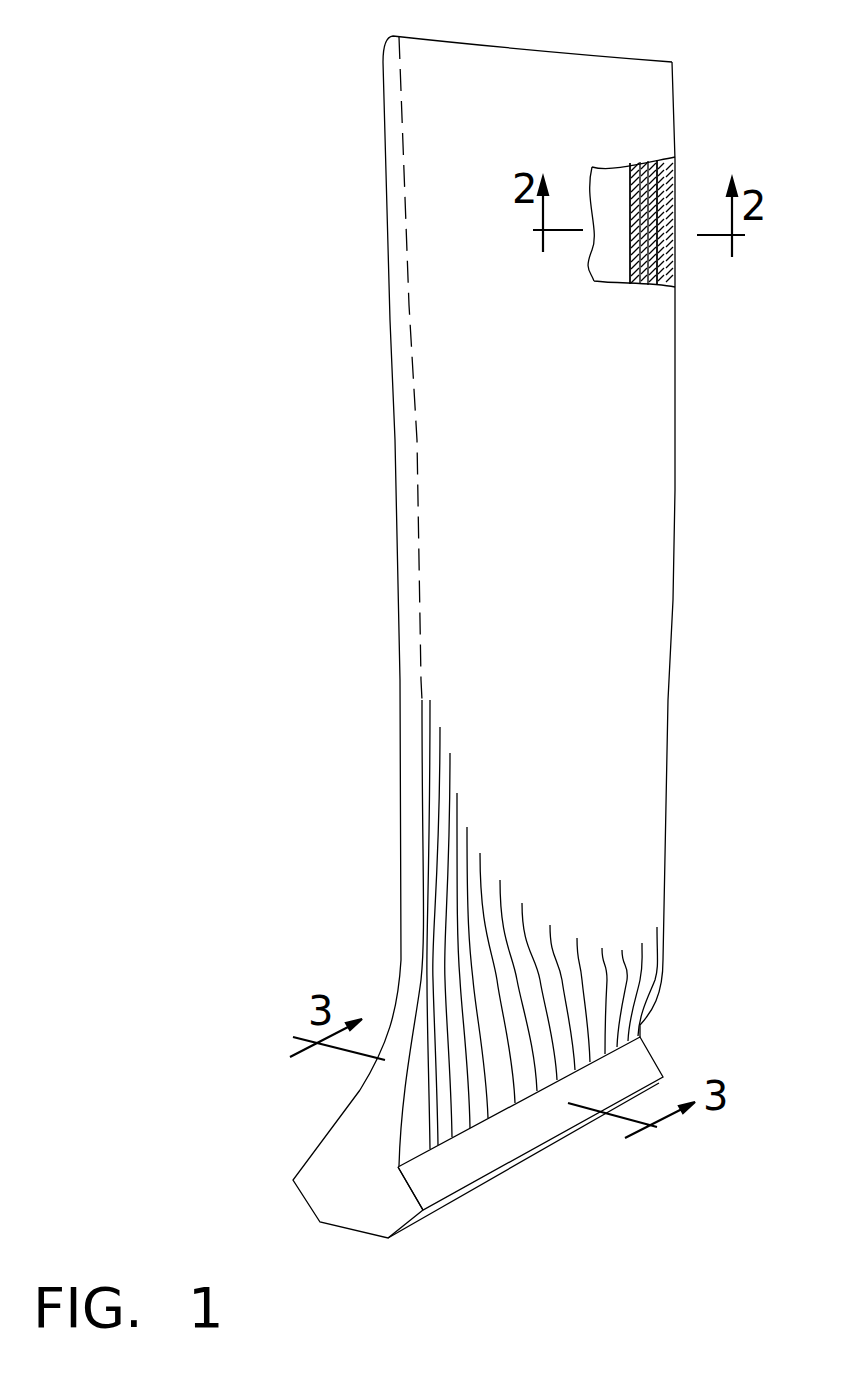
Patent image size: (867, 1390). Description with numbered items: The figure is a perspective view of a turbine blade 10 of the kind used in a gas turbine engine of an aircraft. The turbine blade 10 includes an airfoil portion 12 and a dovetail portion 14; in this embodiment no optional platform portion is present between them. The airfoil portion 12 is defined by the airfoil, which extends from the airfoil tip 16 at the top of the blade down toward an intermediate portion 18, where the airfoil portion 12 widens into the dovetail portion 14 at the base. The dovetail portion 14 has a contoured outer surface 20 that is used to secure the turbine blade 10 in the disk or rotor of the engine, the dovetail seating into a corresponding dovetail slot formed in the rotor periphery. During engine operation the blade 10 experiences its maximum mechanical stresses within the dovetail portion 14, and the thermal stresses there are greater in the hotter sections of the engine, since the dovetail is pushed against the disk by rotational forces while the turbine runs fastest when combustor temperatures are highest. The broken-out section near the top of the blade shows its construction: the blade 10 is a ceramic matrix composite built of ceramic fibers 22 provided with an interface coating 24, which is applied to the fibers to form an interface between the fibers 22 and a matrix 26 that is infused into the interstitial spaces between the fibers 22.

The turbine blade 10 is at (338, 512).
The airfoil portion 12 is at (677, 490).
The dovetail portion 14 is at (653, 1055).
The airfoil tip 16 is at (390, 33).
The intermediate portion 18 is at (380, 1112).
The contoured outer surface 20 is at (455, 1163).
The ceramic fibers 22 is at (652, 187).
The interface coating 24 is at (658, 250).
The matrix 26 is at (673, 199).